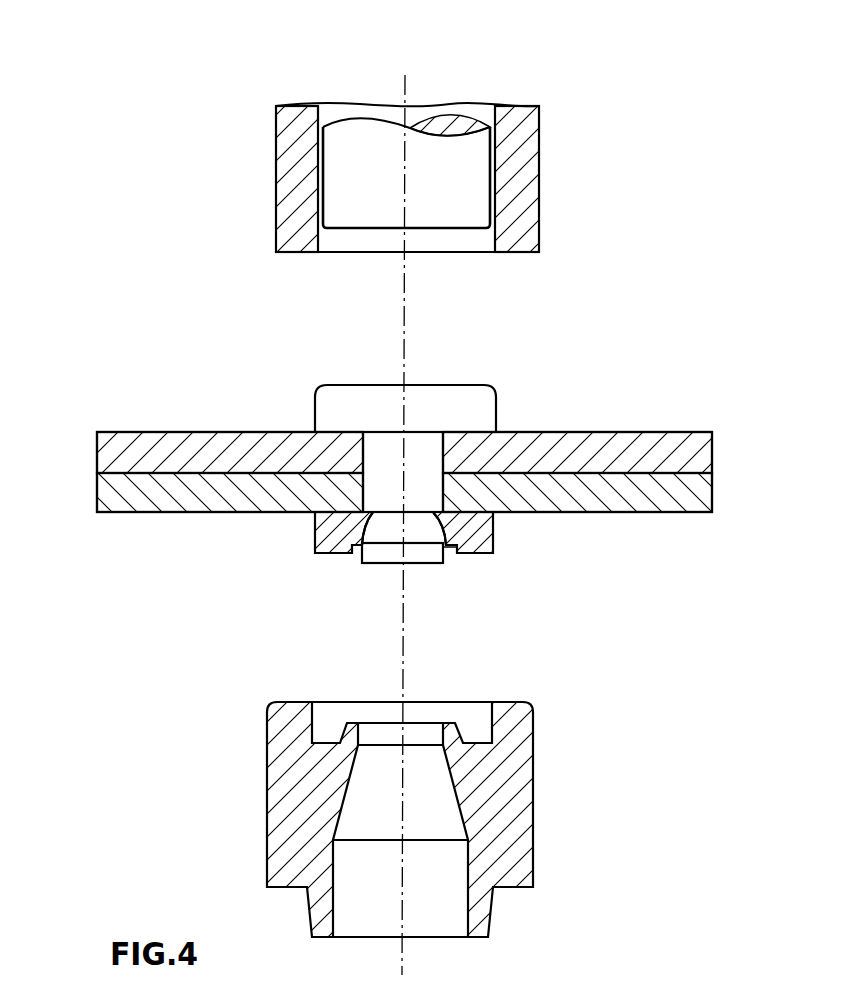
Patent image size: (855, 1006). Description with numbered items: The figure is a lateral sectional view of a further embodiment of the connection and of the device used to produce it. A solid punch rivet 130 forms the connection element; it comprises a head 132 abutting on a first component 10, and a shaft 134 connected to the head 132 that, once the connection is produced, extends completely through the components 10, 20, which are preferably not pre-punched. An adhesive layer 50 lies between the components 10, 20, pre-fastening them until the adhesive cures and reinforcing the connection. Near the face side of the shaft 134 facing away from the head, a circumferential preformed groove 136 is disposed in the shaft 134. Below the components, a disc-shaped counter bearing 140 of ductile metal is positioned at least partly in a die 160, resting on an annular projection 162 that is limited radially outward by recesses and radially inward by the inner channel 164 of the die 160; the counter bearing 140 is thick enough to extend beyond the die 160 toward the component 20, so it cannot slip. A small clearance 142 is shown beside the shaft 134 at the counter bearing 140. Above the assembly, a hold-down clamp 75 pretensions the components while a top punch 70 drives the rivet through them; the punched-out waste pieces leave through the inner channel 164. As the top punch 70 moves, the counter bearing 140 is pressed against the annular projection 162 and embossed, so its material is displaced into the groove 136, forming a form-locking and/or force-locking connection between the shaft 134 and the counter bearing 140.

The first component 10 is at (695, 452).
The second component 20 is at (693, 504).
The adhesive layer 50 is at (93, 472).
The top punch 70 is at (447, 157).
The hold-down clamp 75 is at (551, 175).
The solid punch rivet 130 is at (461, 453).
The head 132 is at (480, 407).
The shaft 134 is at (422, 556).
The groove 136 is at (387, 530).
The counter bearing 140 is at (480, 539).
The gap between shank and collar 142 is at (450, 551).
The die 160 is at (466, 819).
The annular projection 162 is at (453, 733).
The inner channel 164 is at (447, 882).